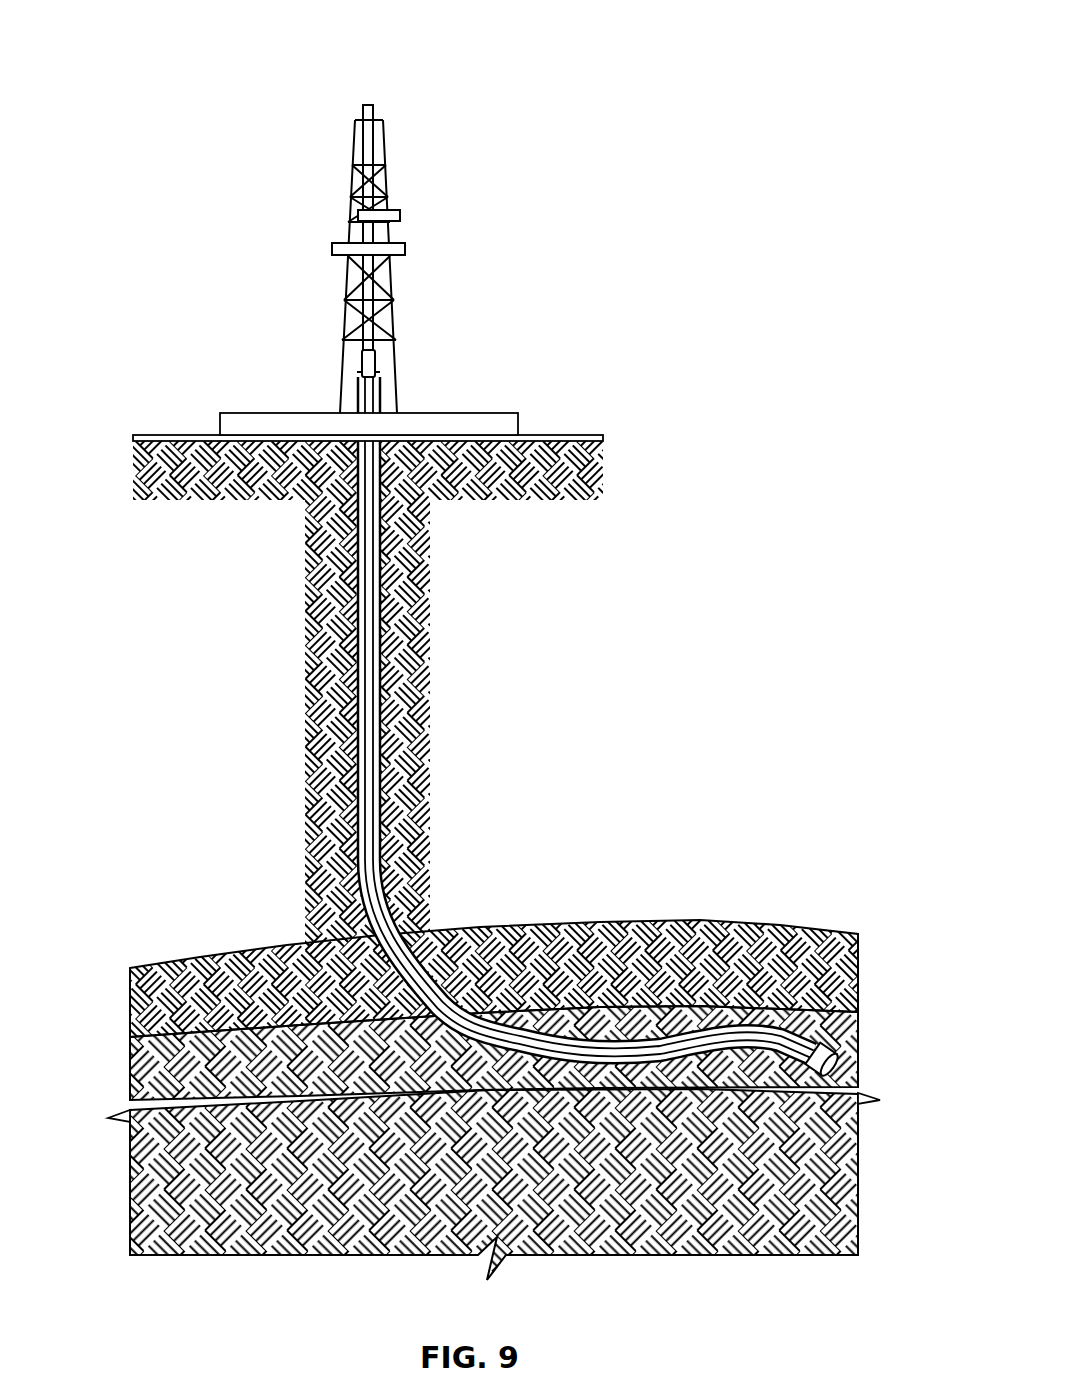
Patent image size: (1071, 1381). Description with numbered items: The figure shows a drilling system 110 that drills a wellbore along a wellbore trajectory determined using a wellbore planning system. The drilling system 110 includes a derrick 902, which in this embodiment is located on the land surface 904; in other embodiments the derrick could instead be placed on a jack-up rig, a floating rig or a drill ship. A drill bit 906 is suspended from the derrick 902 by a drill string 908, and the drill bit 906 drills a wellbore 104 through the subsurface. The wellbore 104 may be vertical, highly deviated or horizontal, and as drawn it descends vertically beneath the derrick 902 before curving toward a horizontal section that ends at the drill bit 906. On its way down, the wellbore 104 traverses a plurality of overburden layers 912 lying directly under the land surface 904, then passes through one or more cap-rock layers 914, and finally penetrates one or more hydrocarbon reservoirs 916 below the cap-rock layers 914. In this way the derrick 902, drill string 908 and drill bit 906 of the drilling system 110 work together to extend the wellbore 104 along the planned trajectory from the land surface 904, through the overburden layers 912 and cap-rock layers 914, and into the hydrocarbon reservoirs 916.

The drilling system 110 is at (140, 40).
The derrick 902 is at (393, 278).
The land surface 904 is at (563, 435).
The drill bit 906 is at (835, 1045).
The drill string 908 is at (386, 390).
The overburden layers 912 is at (430, 578).
The wellbore 104 is at (350, 670).
The cap-rock layers 914 is at (130, 995).
The hydrocarbon reservoirs 916 is at (130, 1065).